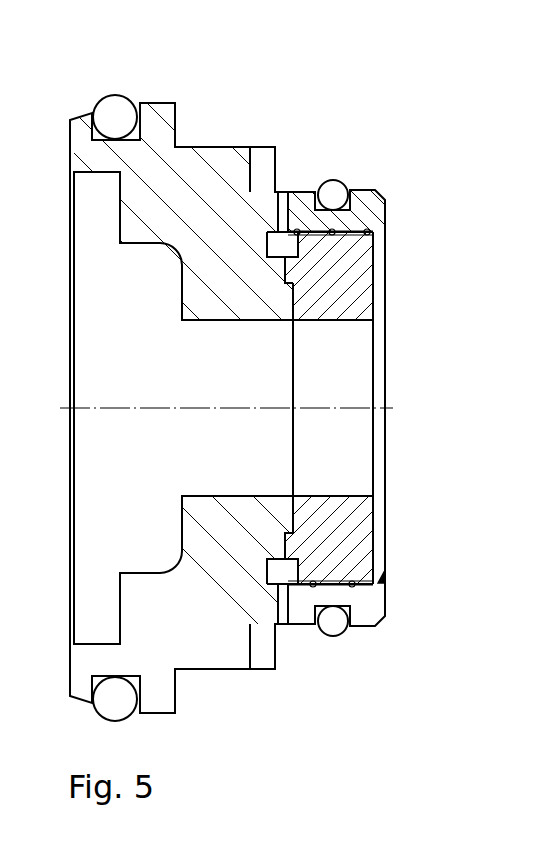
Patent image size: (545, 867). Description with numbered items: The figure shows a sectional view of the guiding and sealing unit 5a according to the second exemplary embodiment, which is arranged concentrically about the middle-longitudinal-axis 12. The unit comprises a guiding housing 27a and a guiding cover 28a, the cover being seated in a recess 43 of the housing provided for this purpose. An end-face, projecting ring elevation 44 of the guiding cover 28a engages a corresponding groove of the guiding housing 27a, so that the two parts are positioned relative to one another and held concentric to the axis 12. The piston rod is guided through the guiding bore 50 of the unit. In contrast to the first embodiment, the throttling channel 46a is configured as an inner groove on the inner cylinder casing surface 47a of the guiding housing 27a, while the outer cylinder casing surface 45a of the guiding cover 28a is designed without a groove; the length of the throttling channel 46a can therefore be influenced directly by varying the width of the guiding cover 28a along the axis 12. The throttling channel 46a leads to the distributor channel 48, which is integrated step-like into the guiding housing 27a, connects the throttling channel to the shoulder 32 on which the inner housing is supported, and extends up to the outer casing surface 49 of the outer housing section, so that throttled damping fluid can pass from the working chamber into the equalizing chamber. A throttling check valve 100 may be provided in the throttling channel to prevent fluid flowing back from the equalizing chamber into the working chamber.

The guiding and sealing unit 5a is at (272, 111).
The middle-longitudinal-axis 12 is at (340, 408).
The guiding housing 27a is at (162, 108).
The guiding cover 28a is at (365, 308).
The shoulder 32 is at (178, 123).
The recess 43 is at (384, 529).
The ring elevation 44 is at (283, 273).
The outer cylinder casing surface 45a is at (358, 231).
The throttling channel 46a is at (378, 234).
The inner cylinder casing surface 47a is at (384, 578).
The distributor channel 48 is at (284, 200).
The outer casing surface 49 is at (157, 105).
The guiding bore 50 is at (374, 358).
The throttling check valve 100 is at (350, 198).